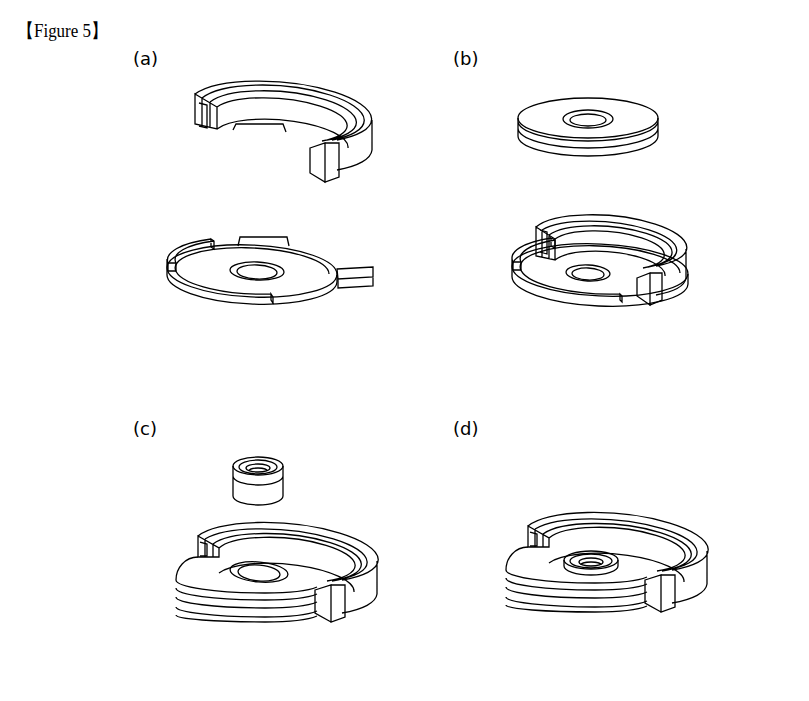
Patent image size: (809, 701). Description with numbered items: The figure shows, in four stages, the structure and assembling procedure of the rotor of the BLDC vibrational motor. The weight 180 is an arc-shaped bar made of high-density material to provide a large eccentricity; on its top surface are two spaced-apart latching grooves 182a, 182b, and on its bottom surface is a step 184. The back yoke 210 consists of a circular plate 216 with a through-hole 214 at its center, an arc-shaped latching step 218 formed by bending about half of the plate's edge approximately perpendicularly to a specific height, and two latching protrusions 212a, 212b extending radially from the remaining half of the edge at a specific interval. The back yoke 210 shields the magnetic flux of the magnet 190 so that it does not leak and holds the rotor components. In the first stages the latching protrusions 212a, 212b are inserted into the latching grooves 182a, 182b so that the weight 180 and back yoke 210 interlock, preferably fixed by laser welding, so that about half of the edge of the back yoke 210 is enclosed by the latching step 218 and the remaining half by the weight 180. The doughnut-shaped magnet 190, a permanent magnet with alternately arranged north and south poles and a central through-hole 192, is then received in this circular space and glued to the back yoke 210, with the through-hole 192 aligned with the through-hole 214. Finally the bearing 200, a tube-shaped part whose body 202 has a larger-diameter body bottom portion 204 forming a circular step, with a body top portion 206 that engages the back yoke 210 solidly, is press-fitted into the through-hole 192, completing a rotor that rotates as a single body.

The weight 180 is at (432, 364).
The latching groove 182a is at (364, 157).
The latching groove 182b is at (254, 130).
The step 184 is at (199, 118).
The magnet 190 is at (422, 376).
The through-hole 192 is at (591, 117).
The bearing 200 is at (420, 547).
The body 202 is at (240, 490).
The body bottom portion 204 is at (241, 463).
The plug flange 206 is at (263, 463).
The back yoke 210 is at (429, 431).
The latching protrusion 212a is at (373, 278).
The latching protrusion 212b is at (257, 237).
The through-hole 214 is at (265, 270).
The circular plate 216 is at (305, 278).
The arc-shaped latching step 218 is at (184, 245).